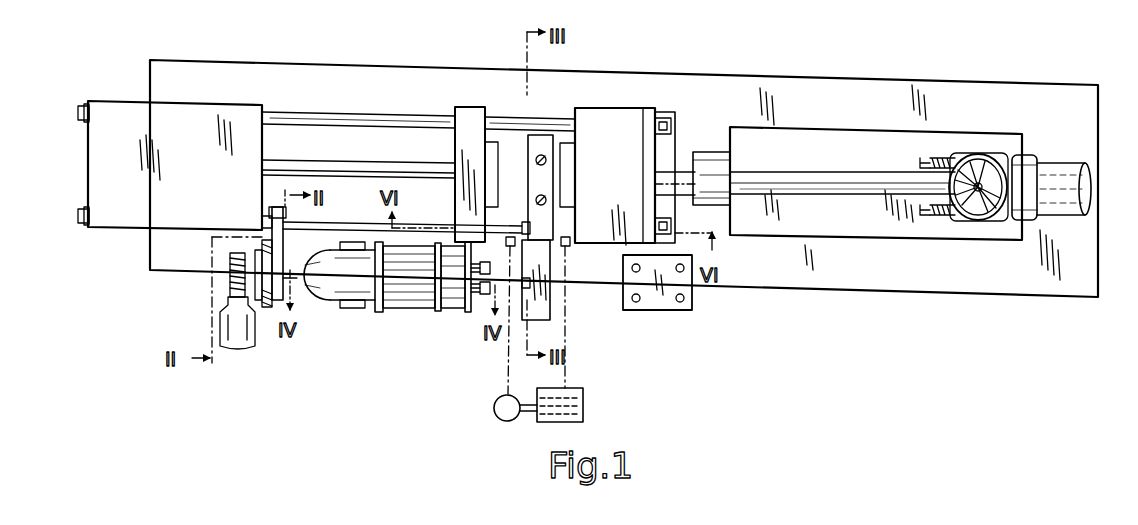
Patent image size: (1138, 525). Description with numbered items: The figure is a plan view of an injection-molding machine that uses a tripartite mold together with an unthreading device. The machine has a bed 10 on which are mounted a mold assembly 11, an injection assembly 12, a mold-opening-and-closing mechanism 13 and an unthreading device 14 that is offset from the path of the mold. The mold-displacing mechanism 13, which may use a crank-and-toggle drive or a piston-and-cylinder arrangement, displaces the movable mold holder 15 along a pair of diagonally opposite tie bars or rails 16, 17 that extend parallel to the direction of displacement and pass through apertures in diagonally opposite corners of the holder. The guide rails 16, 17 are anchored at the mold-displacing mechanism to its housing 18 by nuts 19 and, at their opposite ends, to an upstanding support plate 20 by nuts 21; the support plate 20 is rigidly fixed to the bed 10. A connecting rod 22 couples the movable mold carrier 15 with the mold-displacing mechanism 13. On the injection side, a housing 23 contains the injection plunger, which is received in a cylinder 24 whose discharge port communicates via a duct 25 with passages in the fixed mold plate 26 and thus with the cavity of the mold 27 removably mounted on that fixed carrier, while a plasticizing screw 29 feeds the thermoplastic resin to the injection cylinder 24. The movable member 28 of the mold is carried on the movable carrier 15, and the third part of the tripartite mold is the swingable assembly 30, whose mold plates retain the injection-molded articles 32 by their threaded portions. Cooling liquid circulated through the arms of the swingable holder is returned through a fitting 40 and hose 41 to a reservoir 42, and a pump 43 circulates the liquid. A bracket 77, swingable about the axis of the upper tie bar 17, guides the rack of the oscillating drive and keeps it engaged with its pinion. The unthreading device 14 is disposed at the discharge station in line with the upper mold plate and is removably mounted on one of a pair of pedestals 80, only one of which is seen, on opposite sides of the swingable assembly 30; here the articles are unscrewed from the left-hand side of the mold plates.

The bed 10 is at (1094, 84).
The mold assembly 11 is at (656, 106).
The injection assembly 12 is at (966, 130).
The mold-opening-and-closing mechanism 13 is at (140, 98).
The unthreading device 14 is at (385, 316).
The movable mold holder 15 is at (467, 107).
The tie bar 16 is at (290, 112).
The tie bar 17 is at (262, 214).
The housing 18 is at (108, 230).
The nuts 19 is at (76, 113).
The support plate 20 is at (675, 113).
The nuts 21 is at (672, 127).
The connecting rod 22 is at (320, 160).
The housing 23 is at (866, 241).
The cylinder 24 is at (722, 153).
The duct 25 is at (653, 172).
The fixed mold plate 26 is at (607, 113).
The mold 27 is at (568, 178).
The movable member of the mold 28 is at (490, 155).
The plasticizing screw 29 is at (841, 176).
The swingable assembly 30 is at (524, 208).
The injection-molded articles 32 is at (521, 280).
The fitting 40 is at (569, 246).
The hose 41 is at (565, 372).
The reservoir 42 is at (584, 410).
The pump 43 is at (494, 412).
The bracket 77 is at (312, 226).
The pedestals 80 is at (692, 306).